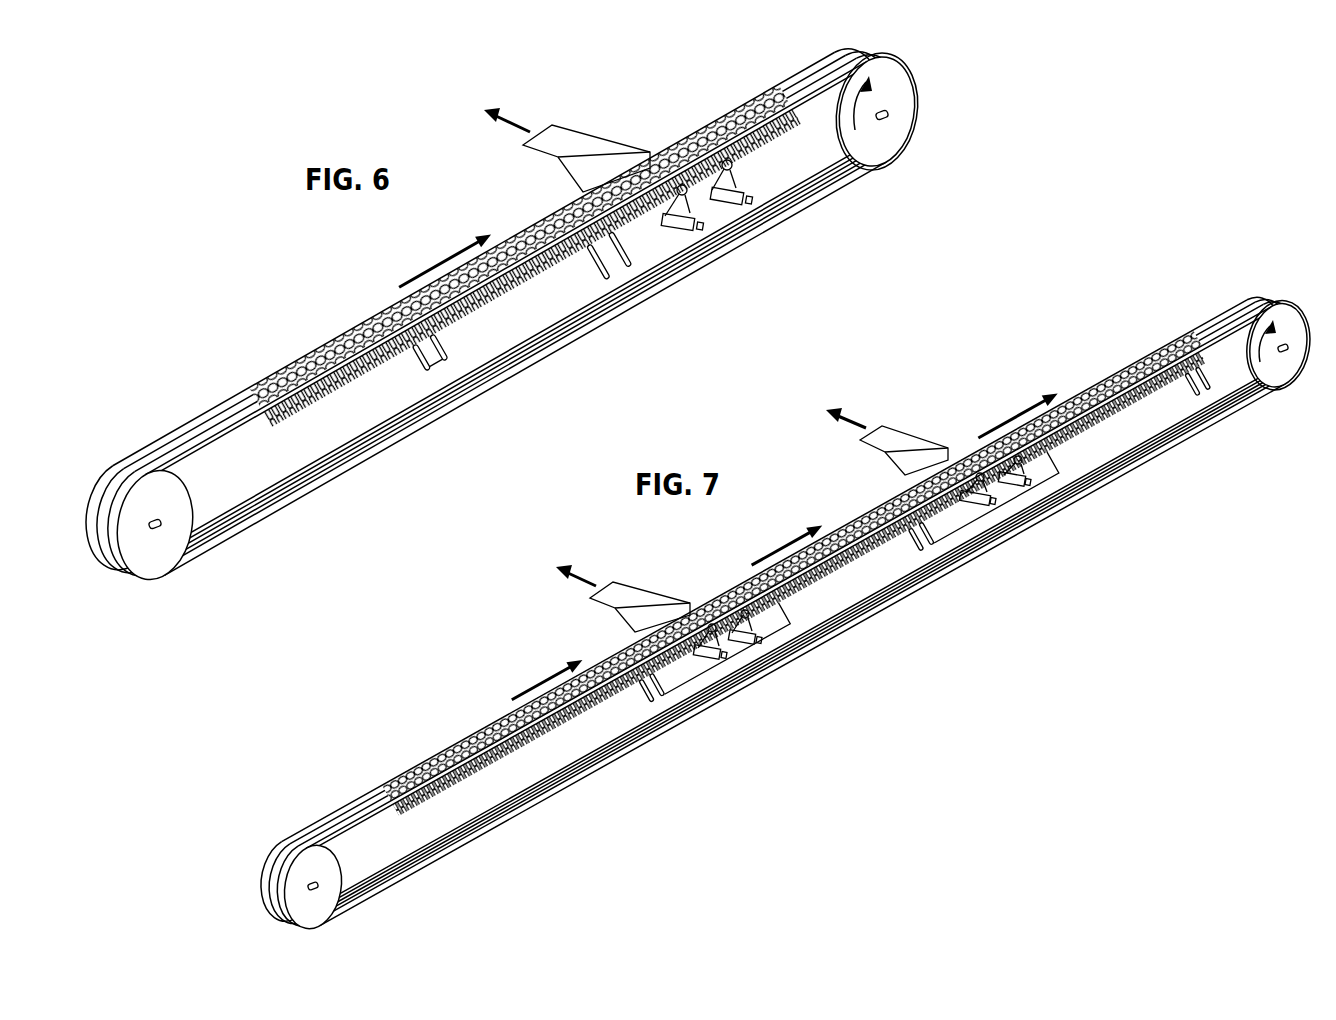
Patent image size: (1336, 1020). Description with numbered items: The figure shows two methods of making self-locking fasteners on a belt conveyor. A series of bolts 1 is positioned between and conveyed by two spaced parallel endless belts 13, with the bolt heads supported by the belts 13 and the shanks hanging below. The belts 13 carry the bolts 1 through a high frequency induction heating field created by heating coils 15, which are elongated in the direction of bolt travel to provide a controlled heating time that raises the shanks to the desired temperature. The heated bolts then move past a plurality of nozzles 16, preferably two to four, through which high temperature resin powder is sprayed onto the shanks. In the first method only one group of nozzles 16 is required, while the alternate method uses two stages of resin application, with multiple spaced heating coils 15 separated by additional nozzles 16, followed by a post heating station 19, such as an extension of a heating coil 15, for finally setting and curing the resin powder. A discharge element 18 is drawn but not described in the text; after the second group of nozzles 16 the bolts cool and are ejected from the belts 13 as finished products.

In FIG. 6, the bolts 1 is at (513, 333).
In FIG. 7, the bolts 1 is at (763, 601).
In FIG. 6, the endless belts 13 is at (205, 432).
In FIG. 7, the endless belts 13 is at (350, 805).
In FIG. 6, the heating coils 15 is at (522, 296).
In FIG. 7, the heating coils 15 is at (583, 718).
In FIG. 6, the nozzles 16 is at (682, 228).
In FIG. 7, the nozzles 16 is at (705, 658).
In FIG. 6, the discharge chute 18 is at (593, 152).
In FIG. 7, the discharge chute 18 is at (662, 602).
In FIG. 7, the post heating station 19 is at (1125, 402).